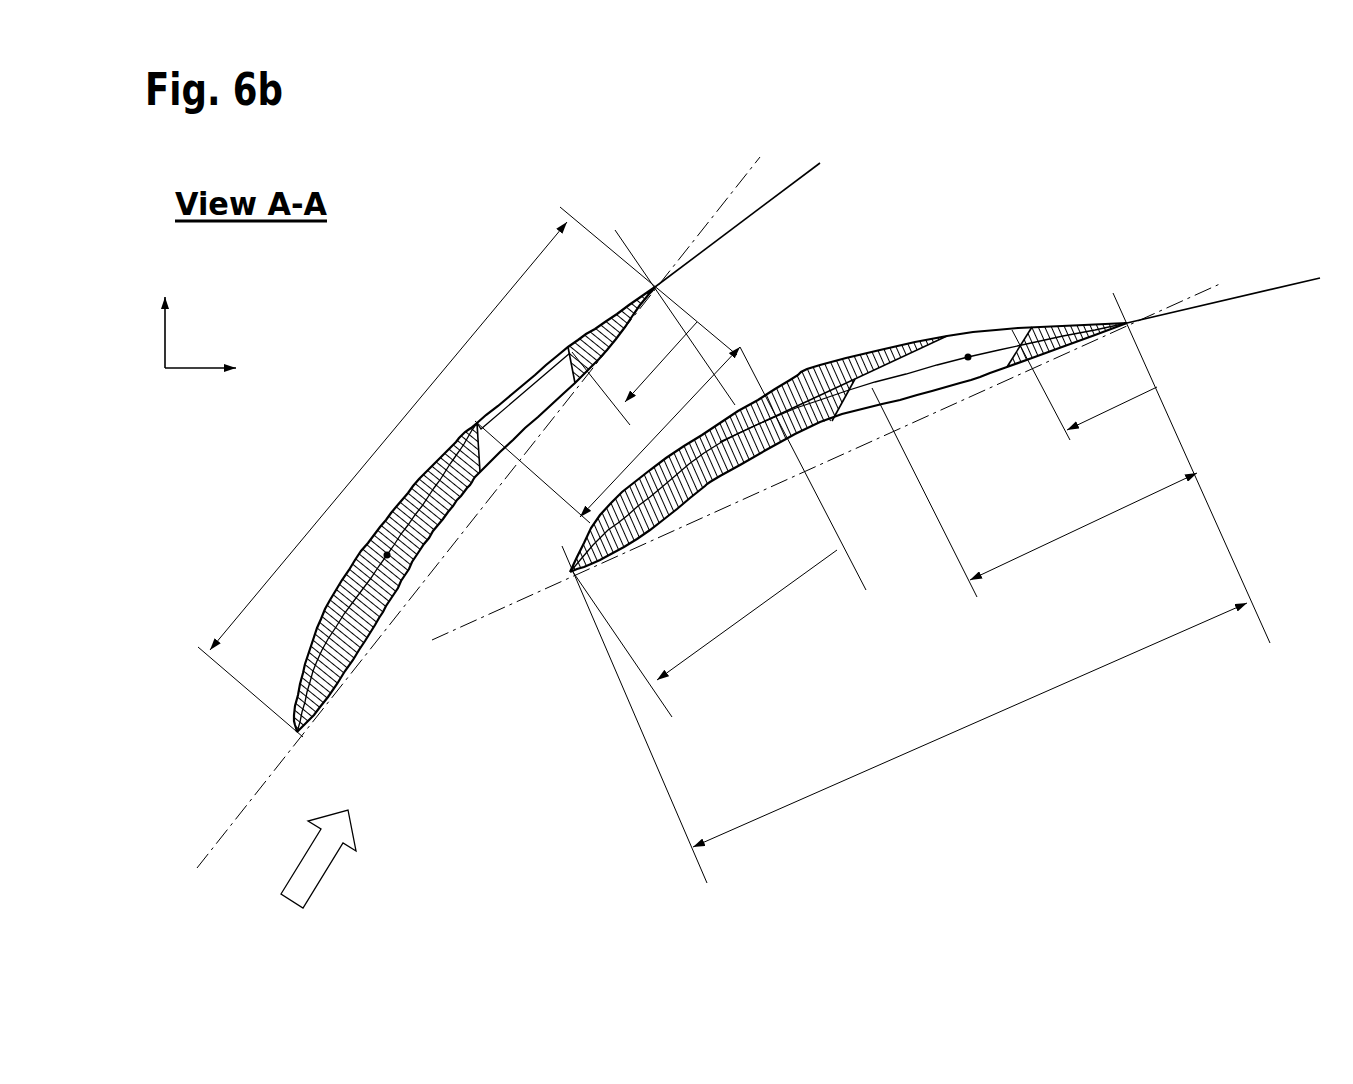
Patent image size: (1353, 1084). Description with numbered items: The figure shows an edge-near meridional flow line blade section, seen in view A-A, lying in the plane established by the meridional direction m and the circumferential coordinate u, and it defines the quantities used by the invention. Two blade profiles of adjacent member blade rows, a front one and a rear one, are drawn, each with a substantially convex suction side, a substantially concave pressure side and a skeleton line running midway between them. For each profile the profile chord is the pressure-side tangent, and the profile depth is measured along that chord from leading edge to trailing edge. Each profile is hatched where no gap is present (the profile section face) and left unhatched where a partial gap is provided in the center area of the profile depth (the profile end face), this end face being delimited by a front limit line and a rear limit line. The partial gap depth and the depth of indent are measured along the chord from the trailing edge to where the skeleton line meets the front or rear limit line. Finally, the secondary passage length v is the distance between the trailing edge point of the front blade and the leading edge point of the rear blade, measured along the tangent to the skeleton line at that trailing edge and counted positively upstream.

The secondary passage length v is at (719, 532).
The circumferential coordinate u is at (151, 328).
The meridional direction m is at (219, 373).